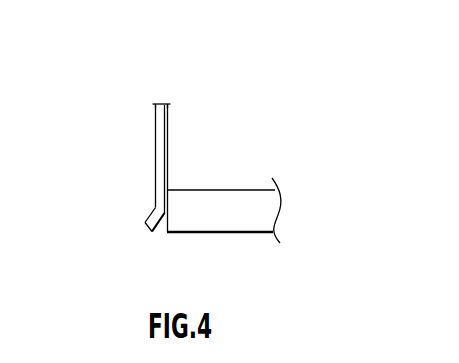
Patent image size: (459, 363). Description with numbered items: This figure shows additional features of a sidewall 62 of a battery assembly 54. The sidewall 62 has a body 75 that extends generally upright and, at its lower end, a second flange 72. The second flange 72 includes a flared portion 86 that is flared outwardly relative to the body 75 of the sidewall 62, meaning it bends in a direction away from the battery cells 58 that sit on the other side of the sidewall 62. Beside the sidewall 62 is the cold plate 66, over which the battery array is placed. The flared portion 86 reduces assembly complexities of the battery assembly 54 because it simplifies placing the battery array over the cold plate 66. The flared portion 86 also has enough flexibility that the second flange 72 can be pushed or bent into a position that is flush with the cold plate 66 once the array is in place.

The battery assembly 54 is at (236, 108).
The battery cells 58 is at (212, 162).
The sidewall 62 is at (140, 156).
The cold plate 66 is at (219, 221).
The second flange 72 is at (130, 230).
The body 75 is at (156, 114).
The flared portion 86 is at (150, 217).